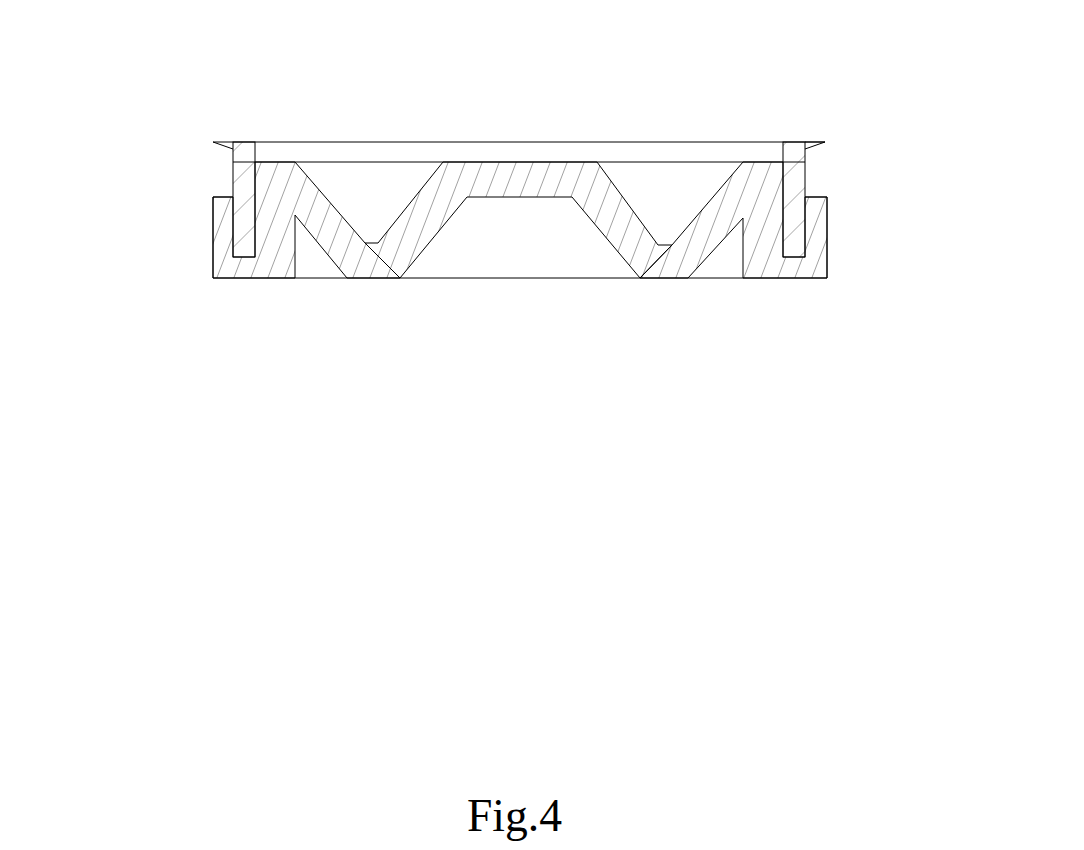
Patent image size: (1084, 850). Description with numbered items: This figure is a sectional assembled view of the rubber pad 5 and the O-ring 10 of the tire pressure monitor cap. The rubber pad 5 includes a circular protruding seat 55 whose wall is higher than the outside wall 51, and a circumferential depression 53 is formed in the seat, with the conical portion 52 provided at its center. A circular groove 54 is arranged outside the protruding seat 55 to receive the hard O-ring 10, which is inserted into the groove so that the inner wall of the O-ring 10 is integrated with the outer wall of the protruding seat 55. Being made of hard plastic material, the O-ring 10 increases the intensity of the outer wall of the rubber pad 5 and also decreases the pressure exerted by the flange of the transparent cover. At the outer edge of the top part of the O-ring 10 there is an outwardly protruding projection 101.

The rubber pad 5 is at (102, 65).
The outside wall 51 is at (227, 237).
The conical portion 52 is at (492, 172).
The circumferential depression 53 is at (333, 185).
The circular groove 54 is at (242, 228).
The circular protruding seat 55 is at (256, 219).
The O-ring 10 is at (797, 183).
The outwardly protruding projection 101 is at (803, 142).